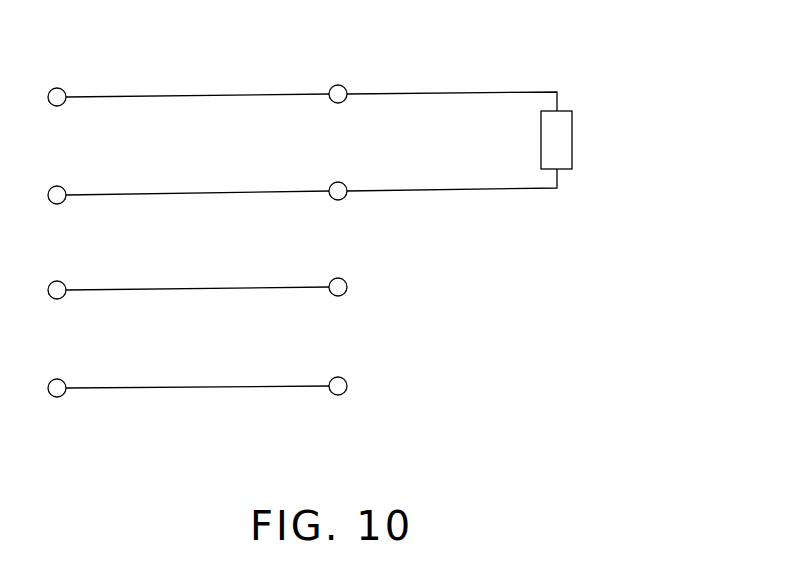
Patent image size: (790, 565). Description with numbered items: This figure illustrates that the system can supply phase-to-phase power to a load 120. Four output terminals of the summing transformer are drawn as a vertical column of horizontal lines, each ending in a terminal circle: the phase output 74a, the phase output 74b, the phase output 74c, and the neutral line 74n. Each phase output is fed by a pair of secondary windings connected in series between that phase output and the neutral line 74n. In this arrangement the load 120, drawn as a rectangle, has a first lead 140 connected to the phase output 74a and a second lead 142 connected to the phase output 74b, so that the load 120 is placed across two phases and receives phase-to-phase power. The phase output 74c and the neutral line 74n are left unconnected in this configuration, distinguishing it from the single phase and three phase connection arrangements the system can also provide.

The phase output 74a is at (188, 79).
The phase output 74b is at (188, 177).
The phase output 74c is at (188, 273).
The neutral line 74n is at (188, 371).
The first lead 140 is at (393, 92).
The second lead 142 is at (407, 192).
The load 120 is at (572, 135).